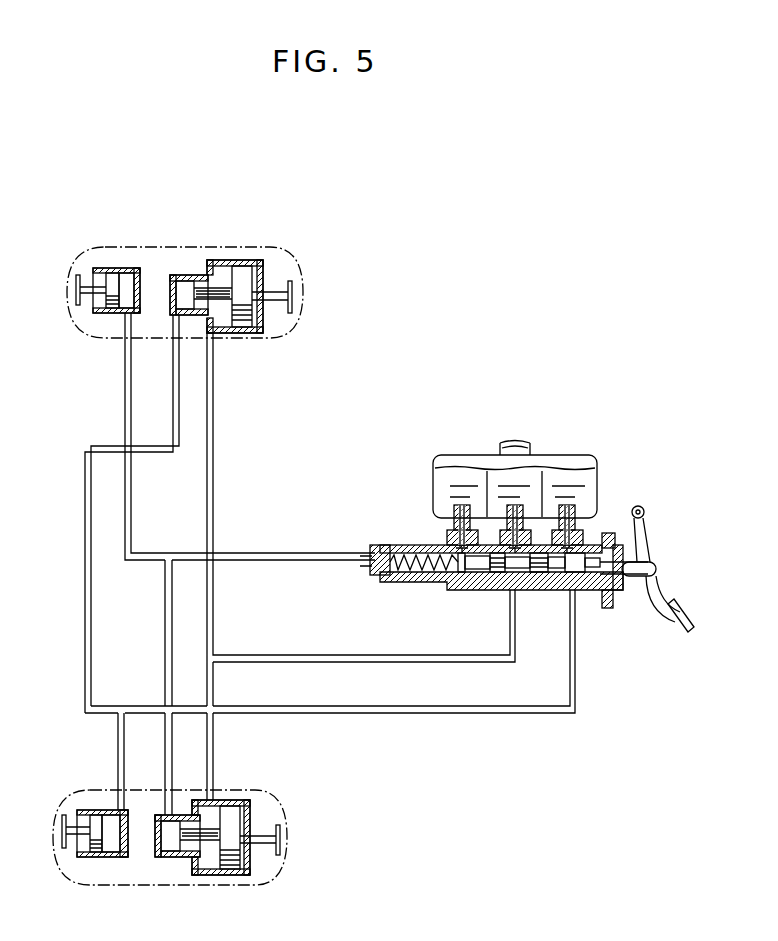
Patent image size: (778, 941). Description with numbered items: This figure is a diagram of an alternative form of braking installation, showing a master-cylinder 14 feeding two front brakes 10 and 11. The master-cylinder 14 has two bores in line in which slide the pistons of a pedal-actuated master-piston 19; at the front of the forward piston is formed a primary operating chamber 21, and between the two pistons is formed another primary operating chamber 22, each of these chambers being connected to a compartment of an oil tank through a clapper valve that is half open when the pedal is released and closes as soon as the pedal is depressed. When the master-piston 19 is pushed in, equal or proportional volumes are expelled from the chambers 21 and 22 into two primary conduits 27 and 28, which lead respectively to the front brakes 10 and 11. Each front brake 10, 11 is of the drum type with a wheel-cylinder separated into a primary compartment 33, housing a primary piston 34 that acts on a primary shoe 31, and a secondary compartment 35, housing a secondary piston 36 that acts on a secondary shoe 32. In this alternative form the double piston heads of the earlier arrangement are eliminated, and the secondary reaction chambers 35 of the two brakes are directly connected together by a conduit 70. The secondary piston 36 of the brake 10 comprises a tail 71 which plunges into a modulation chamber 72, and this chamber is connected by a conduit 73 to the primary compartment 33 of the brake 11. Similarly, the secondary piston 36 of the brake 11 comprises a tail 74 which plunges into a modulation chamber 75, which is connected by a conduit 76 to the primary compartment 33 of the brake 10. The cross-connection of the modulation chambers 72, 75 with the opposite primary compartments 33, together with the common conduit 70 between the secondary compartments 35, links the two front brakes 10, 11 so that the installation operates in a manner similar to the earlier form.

The front brake 10 is at (70, 262).
The front brake 11 is at (60, 808).
The master-cylinder 14 is at (470, 590).
The master-piston 19 is at (619, 596).
The primary operating chamber 21 is at (410, 547).
The primary operating chamber 22 is at (598, 545).
The primary conduit 27 is at (276, 553).
The primary conduit 28 is at (433, 714).
The primary shoe 31 is at (76, 292).
The secondary shoe 32 is at (292, 297).
The primary compartment 33 is at (127, 282).
The primary piston 34 is at (110, 282).
The secondary compartment 35 is at (236, 272).
The secondary piston 36 is at (252, 270).
The conduit 70 is at (214, 392).
The tail 71 is at (213, 290).
The modulation chamber 72 is at (181, 283).
The conduit 73 is at (172, 407).
The tail 74 is at (190, 812).
The modulation chamber 75 is at (170, 840).
The conduit 76 is at (165, 618).